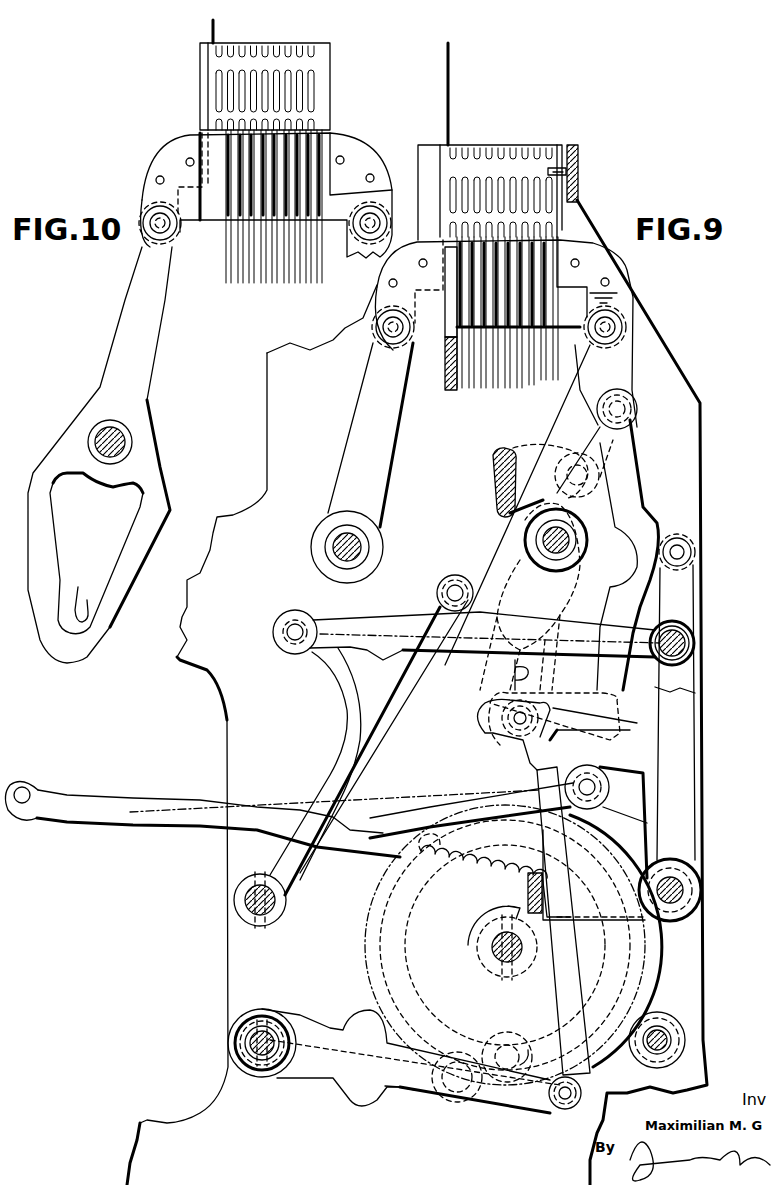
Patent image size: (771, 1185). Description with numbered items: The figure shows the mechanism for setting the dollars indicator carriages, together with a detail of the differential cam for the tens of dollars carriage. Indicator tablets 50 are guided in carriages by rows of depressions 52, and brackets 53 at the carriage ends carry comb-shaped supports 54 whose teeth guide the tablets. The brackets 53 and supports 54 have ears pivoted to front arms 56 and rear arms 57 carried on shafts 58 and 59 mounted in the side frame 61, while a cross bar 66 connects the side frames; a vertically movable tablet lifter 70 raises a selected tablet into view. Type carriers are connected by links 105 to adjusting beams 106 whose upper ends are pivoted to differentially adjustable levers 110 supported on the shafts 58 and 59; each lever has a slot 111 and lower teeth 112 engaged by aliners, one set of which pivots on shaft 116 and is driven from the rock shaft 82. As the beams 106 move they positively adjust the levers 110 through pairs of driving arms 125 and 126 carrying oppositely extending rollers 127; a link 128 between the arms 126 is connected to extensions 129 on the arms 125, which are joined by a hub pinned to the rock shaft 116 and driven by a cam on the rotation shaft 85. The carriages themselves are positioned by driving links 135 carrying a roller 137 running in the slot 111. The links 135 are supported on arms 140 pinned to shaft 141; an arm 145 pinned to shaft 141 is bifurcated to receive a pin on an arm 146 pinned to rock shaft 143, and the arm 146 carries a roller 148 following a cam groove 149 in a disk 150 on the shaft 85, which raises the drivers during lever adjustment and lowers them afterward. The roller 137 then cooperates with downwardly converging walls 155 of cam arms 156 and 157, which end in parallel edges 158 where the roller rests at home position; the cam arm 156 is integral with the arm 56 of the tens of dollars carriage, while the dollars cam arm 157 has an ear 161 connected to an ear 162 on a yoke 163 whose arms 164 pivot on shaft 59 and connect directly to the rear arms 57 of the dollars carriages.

In FIG. 10, the indicator tablets 50 is at (295, 280).
In FIG. 9, the indicator tablets 50 is at (487, 388).
In FIG. 10, the depressions 52 is at (312, 123).
In FIG. 9, the depressions 52 is at (477, 227).
In FIG. 9, the brackets 53 is at (615, 287).
In FIG. 10, the comb-shaped supports 54 is at (203, 213).
In FIG. 9, the comb-shaped supports 54 is at (437, 330).
In FIG. 10, the arms 56 is at (125, 308).
In FIG. 9, the arms 56 is at (368, 377).
In FIG. 9, the arms 57 is at (598, 405).
In FIG. 10, the shaft 58 is at (100, 437).
In FIG. 9, the shaft 58 is at (337, 540).
In FIG. 9, the shaft 59 is at (525, 540).
In FIG. 9, the side frame 61 is at (270, 385).
In FIG. 9, the cross bar 66 is at (578, 147).
In FIG. 9, the tablet lifter 70 is at (450, 388).
In FIG. 9, the rock shaft 82 is at (680, 896).
In FIG. 9, the rotation shaft 85 is at (515, 953).
In FIG. 9, the links 105 is at (107, 803).
In FIG. 9, the adjusting beams 106 is at (630, 470).
In FIG. 9, the differentially adjustable levers 110 is at (597, 437).
In FIG. 9, the slot 111 is at (513, 680).
In FIG. 9, the teeth 112 is at (420, 850).
In FIG. 9, the rock shaft 116 is at (272, 903).
In FIG. 9, the driving arms 125 is at (383, 710).
In FIG. 9, the driving arms 126 is at (695, 725).
In FIG. 9, the rollers 127 is at (455, 583).
In FIG. 9, the link 128 is at (405, 625).
In FIG. 9, the extensions 129 is at (335, 665).
In FIG. 9, the driving links 135 is at (557, 843).
In FIG. 9, the roller 137 is at (505, 730).
In FIG. 9, the arms 140 is at (418, 1080).
In FIG. 9, the rock shaft 141 is at (276, 1052).
In FIG. 9, the rock shaft 143 is at (670, 1047).
In FIG. 9, the arm 145 is at (397, 1092).
In FIG. 9, the arm 146 is at (605, 1060).
In FIG. 9, the roller 148 is at (525, 1060).
In FIG. 9, the cam groove 149 is at (420, 1012).
In FIG. 9, the disk 150 is at (375, 945).
In FIG. 10, the downwardly converging walls 155 is at (125, 543).
In FIG. 10, the cam arm 156 is at (160, 512).
In FIG. 9, the cam arm 157 is at (490, 573).
In FIG. 10, the parallel edges 158 is at (105, 580).
In FIG. 9, the ear 161 is at (553, 460).
In FIG. 9, the ear 162 is at (570, 460).
In FIG. 9, the yoke 163 is at (500, 470).
In FIG. 9, the arms 164 is at (527, 517).